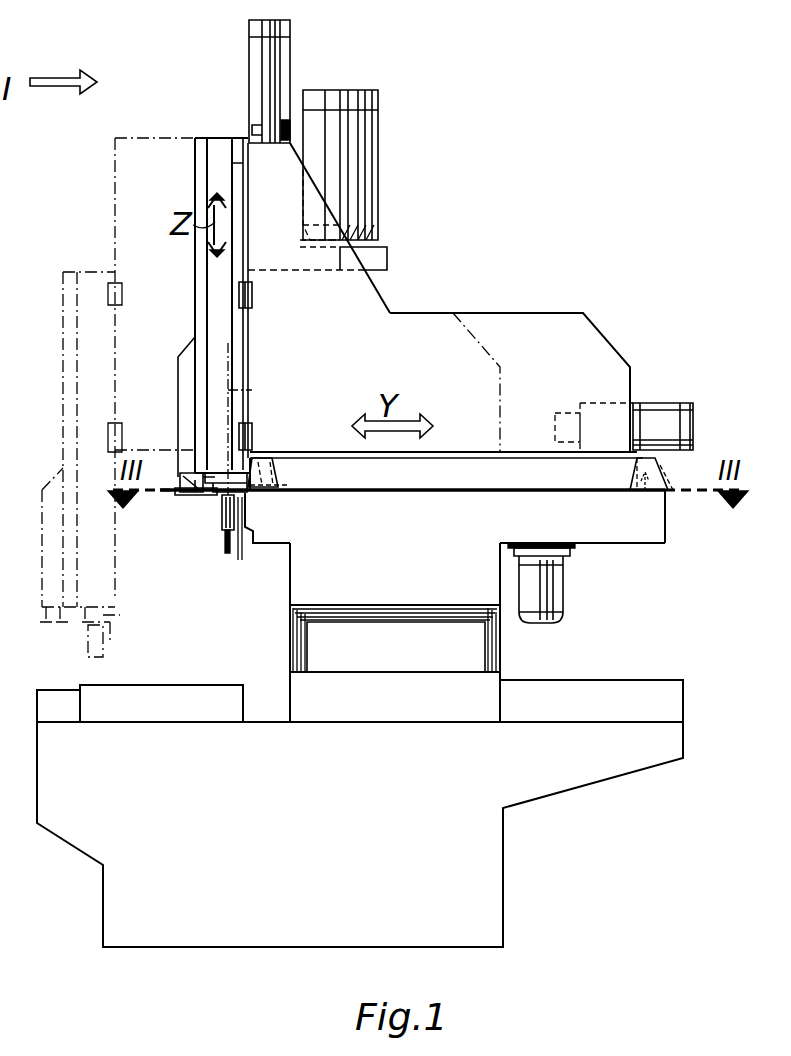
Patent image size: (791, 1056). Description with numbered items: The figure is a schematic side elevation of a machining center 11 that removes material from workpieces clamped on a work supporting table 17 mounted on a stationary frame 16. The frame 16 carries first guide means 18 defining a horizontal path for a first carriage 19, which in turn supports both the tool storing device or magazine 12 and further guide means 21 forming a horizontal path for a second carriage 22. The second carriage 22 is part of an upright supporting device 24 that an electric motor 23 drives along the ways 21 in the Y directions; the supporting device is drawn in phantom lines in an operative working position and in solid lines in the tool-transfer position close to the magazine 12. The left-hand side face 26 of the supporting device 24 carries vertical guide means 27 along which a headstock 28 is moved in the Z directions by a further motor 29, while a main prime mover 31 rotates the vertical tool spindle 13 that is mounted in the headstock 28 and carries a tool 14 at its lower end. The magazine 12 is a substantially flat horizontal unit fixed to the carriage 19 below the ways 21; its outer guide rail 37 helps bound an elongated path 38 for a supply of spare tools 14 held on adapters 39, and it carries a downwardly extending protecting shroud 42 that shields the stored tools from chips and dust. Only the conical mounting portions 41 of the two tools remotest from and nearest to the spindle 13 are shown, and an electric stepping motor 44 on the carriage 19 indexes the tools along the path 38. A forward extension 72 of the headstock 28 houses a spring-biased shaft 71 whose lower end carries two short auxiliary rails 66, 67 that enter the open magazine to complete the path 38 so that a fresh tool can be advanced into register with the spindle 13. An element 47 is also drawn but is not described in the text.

The machine 11 is at (458, 190).
The tool storing device 12 is at (648, 472).
The tool spindle 13 is at (222, 506).
The tool 14 is at (655, 491).
The frame 16 is at (506, 860).
The work supporting table 17 is at (160, 690).
The first guide means 18 is at (396, 716).
The first carriage 19 is at (401, 592).
The guide means 21 is at (457, 452).
The second carriage 22 is at (516, 326).
The electric motor 23 is at (657, 412).
The supporting device 24 is at (424, 313).
The left-hand side face 26 is at (231, 160).
The vertical guide means 27 is at (254, 358).
The headstock 28 is at (210, 163).
The further motor 29 is at (262, 62).
The main prime mover 31 is at (372, 152).
The outer guide rail 37 is at (598, 493).
The path 38 is at (538, 482).
The adapter 39 is at (240, 520).
The conical mounting portion 41 is at (272, 463).
The protecting shroud 42 is at (578, 512).
The electric motor 44 is at (563, 590).
The sensor 47 is at (250, 392).
The auxiliary rail 66 is at (244, 491).
The auxiliary rail 67 is at (181, 495).
The shaft 71 is at (192, 478).
The forward extension 72 is at (180, 368).